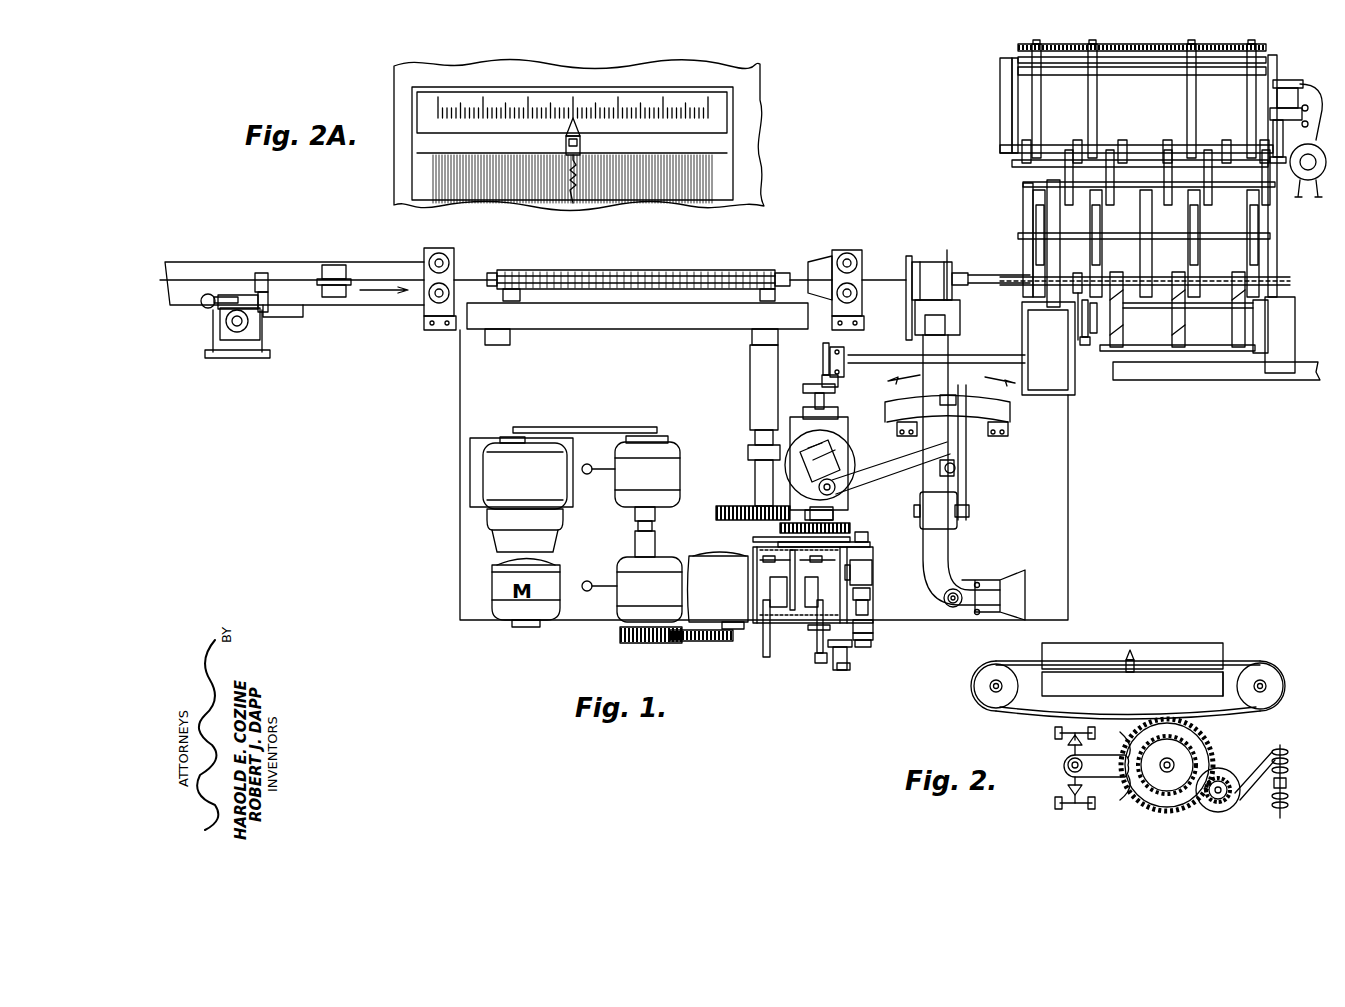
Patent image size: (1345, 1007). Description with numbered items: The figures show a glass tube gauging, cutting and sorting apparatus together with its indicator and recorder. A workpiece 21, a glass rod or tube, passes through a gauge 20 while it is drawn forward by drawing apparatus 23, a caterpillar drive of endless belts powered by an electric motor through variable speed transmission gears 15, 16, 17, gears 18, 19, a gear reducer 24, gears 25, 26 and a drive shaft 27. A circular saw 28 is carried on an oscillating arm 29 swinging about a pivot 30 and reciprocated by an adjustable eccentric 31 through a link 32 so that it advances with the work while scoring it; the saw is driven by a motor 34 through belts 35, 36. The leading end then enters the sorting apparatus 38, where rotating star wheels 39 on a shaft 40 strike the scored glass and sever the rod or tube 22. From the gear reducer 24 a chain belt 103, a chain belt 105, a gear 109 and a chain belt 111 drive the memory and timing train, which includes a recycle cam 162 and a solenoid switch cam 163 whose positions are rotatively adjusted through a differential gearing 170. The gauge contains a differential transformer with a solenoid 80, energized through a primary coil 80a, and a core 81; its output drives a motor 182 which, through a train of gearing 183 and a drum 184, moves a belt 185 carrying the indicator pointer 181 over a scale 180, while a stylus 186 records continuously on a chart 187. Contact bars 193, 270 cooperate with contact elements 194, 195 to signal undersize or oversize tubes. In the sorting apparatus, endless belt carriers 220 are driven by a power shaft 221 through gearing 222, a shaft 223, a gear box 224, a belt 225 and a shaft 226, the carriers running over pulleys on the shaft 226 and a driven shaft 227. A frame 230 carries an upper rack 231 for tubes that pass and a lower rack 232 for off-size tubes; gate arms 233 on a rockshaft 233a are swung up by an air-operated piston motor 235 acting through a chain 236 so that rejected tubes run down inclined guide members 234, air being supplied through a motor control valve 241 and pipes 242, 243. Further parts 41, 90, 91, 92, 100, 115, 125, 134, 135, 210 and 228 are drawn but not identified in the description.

In FIG. 1, the variable speed transmission gear 15 is at (525, 494).
In FIG. 1, the variable speed transmission gear 16 is at (631, 496).
In FIG. 1, the variable speed transmission gear 17 is at (632, 589).
In FIG. 1, the gear 18 is at (650, 643).
In FIG. 1, the gear 19 is at (705, 642).
In FIG. 1, the gauge 20 is at (279, 336).
In FIG. 1, the workpiece 21 is at (372, 278).
In FIG. 1, the rod or tube 22 is at (1245, 72).
In FIG. 1, the drawing apparatus 23 is at (701, 265).
In FIG. 1, the gear reducer 24 is at (705, 565).
In FIG. 1, the gear 25 is at (716, 515).
In FIG. 1, the gear 26 is at (755, 502).
In FIG. 1, the drive shaft 27 is at (760, 298).
In FIG. 1, the circular saw 28 is at (948, 258).
In FIG. 1, the oscillating arm 29 is at (925, 441).
In FIG. 1, the pivot 30 is at (958, 590).
In FIG. 1, the adjustable eccentric 31 is at (836, 468).
In FIG. 1, the link 32 is at (890, 478).
In FIG. 1, the motor 34 is at (940, 520).
In FIG. 1, the belt 35 is at (968, 483).
In FIG. 1, the belt 36 is at (912, 306).
In FIG. 1, the sorting apparatus 38 is at (1300, 259).
In FIG. 1, the star wheels 39 is at (1232, 338).
In FIG. 1, the shaft 40 is at (1153, 310).
In FIG. 1, the clamp 41 is at (262, 273).
In FIG. 2, the solenoid 80 is at (1283, 763).
In FIG. 2, the primary coil 80a is at (1275, 805).
In FIG. 2, the core 81 is at (1270, 756).
In FIG. 1, the rod 90 is at (776, 628).
In FIG. 1, the rod 91 is at (806, 626).
In FIG. 1, the rod 92 is at (796, 572).
In FIG. 2A, the counter 100 is at (665, 93).
In FIG. 2, the counter 100 is at (1262, 647).
In FIG. 1, the chain belt 103 is at (780, 538).
In FIG. 1, the chain belt 105 is at (855, 530).
In FIG. 1, the gear 109 is at (868, 540).
In FIG. 1, the chain belt 111 is at (872, 594).
In FIG. 1, the clutch housing 115 is at (870, 572).
In FIG. 1, the lever 125 is at (850, 667).
In FIG. 1, the housing 134 is at (770, 594).
In FIG. 1, the rod 135 is at (815, 655).
In FIG. 1, the recycle cam 162 is at (875, 636).
In FIG. 1, the solenoid switch cam 163 is at (873, 644).
In FIG. 1, the differential gearing 170 is at (870, 625).
In FIG. 2A, the scale 180 is at (552, 72).
In FIG. 2, the scale 180 is at (1200, 633).
In FIG. 2A, the indicator pointer 181 is at (566, 139).
In FIG. 2, the indicator pointer 181 is at (1148, 640).
In FIG. 2, the motor 182 is at (1222, 768).
In FIG. 2, the train of gearing 183 is at (1170, 812).
In FIG. 2, the drum 184 is at (1195, 748).
In FIG. 2, the belt 185 is at (1030, 713).
In FIG. 2A, the stylus 186 is at (582, 152).
In FIG. 2, the stylus 186 is at (1134, 672).
In FIG. 2A, the chart 187 is at (715, 158).
In FIG. 2, the chart 187 is at (1222, 680).
In FIG. 2, the contact bar 193 is at (1055, 803).
In FIG. 2, the contact element 194 is at (1070, 781).
In FIG. 2, the contact element 195 is at (1068, 748).
In FIG. 1, the lever 210 is at (835, 665).
In FIG. 1, the endless belt carriers 220 is at (1160, 252).
In FIG. 1, the power shaft 221 is at (826, 398).
In FIG. 1, the gearing 222 is at (820, 372).
In FIG. 1, the shaft 223 is at (890, 358).
In FIG. 1, the gear box 224 is at (1052, 392).
In FIG. 1, the belt 225 is at (1077, 273).
In FIG. 1, the shaft 226 is at (1132, 280).
In FIG. 1, the driven shaft 227 is at (1166, 198).
In FIG. 1, the disc 228 is at (1082, 318).
In FIG. 1, the frame 230 is at (1000, 98).
In FIG. 1, the upper rack 231 is at (1097, 112).
In FIG. 1, the lower rack 232 is at (1030, 44).
In FIG. 1, the arms 233 is at (1205, 192).
In FIG. 1, the rockshaft 233a is at (1237, 163).
In FIG. 1, the inclined guide members 234 is at (1166, 143).
In FIG. 1, the air-operated piston motor 235 is at (1288, 80).
In FIG. 1, the chain 236 is at (1273, 140).
In FIG. 1, the motor control valve 241 is at (1318, 175).
In FIG. 1, the pipe 242 is at (1270, 103).
In FIG. 1, the pipe 243 is at (1309, 119).
In FIG. 2, the contact bar 270 is at (1056, 733).